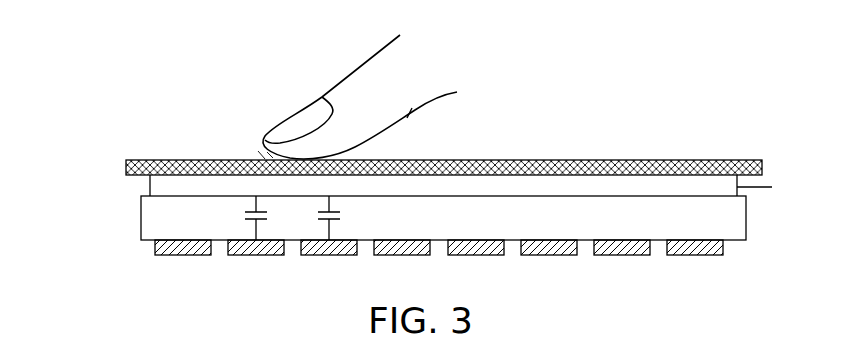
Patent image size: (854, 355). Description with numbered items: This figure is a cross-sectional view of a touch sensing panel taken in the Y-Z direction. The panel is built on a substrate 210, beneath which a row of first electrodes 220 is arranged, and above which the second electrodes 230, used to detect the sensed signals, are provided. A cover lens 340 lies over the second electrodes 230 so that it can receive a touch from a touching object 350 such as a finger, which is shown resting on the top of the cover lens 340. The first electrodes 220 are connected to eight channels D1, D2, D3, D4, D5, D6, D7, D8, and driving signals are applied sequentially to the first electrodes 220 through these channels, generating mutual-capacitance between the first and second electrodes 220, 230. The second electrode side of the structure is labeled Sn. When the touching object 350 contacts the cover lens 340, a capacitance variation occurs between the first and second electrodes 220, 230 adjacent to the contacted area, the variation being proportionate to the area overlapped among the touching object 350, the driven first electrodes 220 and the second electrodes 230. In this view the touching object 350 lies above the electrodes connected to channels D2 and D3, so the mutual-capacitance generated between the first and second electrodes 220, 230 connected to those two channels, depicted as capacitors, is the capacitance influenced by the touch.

The touching object 350 is at (368, 83).
The cover lens 340 is at (562, 160).
The second electrodes 230 is at (158, 183).
The substrate 210 is at (148, 214).
The first electrodes 220 is at (390, 267).
The sensing electrode Sn is at (768, 186).
The channel D1 is at (183, 255).
The channel D2 is at (256, 255).
The channel D3 is at (329, 255).
The channel D4 is at (402, 255).
The channel D5 is at (476, 255).
The channel D6 is at (549, 255).
The channel D7 is at (622, 255).
The channel D8 is at (695, 255).